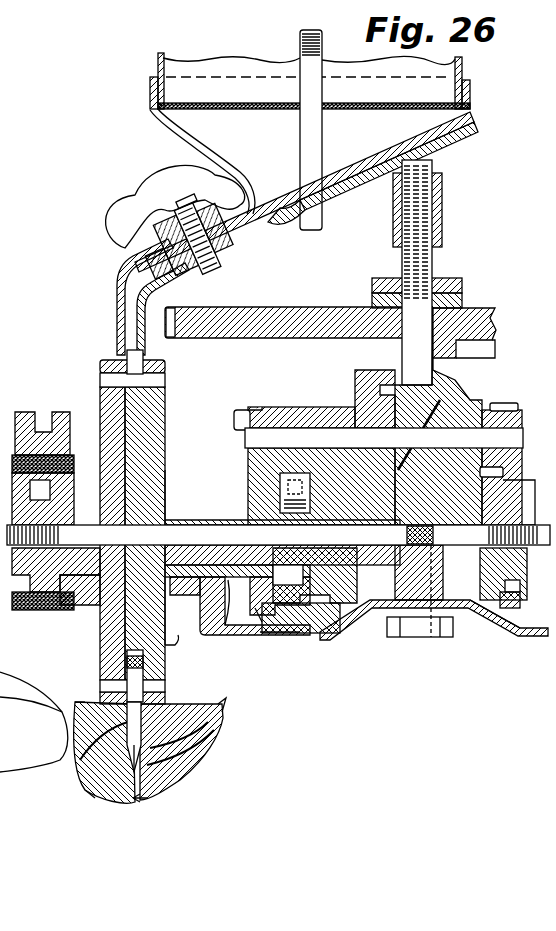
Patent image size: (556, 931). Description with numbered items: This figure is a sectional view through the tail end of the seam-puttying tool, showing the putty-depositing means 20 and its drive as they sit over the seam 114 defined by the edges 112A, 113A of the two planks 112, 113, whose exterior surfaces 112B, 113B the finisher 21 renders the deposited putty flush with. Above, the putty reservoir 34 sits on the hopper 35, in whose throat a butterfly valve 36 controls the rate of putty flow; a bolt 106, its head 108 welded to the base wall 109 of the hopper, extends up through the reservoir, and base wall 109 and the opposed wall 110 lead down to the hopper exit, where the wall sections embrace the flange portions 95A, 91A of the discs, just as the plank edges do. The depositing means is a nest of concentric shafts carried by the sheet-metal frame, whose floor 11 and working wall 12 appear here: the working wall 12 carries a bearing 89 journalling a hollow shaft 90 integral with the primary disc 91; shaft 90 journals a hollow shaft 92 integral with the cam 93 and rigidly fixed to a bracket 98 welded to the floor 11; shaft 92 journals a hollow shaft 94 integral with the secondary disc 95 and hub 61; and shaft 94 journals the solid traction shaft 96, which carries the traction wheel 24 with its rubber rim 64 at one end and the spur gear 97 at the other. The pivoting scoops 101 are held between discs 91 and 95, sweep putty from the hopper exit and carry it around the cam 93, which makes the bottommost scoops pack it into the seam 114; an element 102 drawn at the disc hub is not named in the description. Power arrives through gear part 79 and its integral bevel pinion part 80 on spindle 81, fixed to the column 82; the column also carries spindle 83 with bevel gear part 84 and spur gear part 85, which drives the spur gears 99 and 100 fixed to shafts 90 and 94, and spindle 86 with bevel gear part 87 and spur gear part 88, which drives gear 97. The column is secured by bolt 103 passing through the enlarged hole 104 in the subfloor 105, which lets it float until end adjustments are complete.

The floor 11 is at (520, 636).
The working wall 12 is at (198, 636).
The putty-depositing means 20 is at (150, 415).
The finisher 21 is at (34, 713).
The tail rail-contactor or traction wheel 24 is at (28, 612).
The putty reservoir 34 is at (222, 68).
The hopper 35 is at (202, 161).
The butterfly valve 36 is at (135, 240).
The hub 61 is at (90, 586).
The rim 64 is at (52, 612).
The gear part 79 is at (470, 312).
The bevel pinion part 80 is at (458, 354).
The spindle 81 is at (402, 348).
The column 82 is at (360, 392).
The spindle 83 is at (296, 415).
The bevel gear part 84 is at (440, 430).
The spur gear part 85 is at (235, 440).
The spindle 86 is at (500, 430).
The bevel gear part 87 is at (505, 472).
The spur gear part 88 is at (505, 440).
The bearing 89 is at (228, 630).
The hollow shaft 90 is at (245, 630).
The primary disc 91 is at (152, 480).
The flange portion 91A is at (137, 328).
The hollow shaft 92 is at (190, 580).
The cam 93 is at (143, 660).
The hollow shaft 94 is at (238, 578).
The secondary disc 95 is at (100, 626).
The flange portion 95A is at (150, 700).
The solid traction shaft 96 is at (460, 545).
The spur gear 97 is at (520, 585).
The bracket 98 is at (300, 634).
The spur gear 99 is at (268, 634).
The spur gear 100 is at (345, 570).
The pivoting scoops 101 is at (127, 356).
The washer 102 is at (100, 381).
The bolt 103 is at (420, 636).
The enlarged hole 104 is at (436, 610).
The subfloor 105 is at (490, 618).
The bolt 106 is at (322, 131).
The head 108 is at (302, 222).
The base wall 109 is at (270, 232).
The opposed wall 110 is at (117, 290).
The plank 112 is at (80, 758).
The edge 112A is at (82, 785).
The exterior surface 112B is at (80, 700).
The plank 113 is at (213, 738).
The edge 113A is at (175, 770).
The exterior surface 113B is at (225, 700).
The seam 114 is at (148, 798).